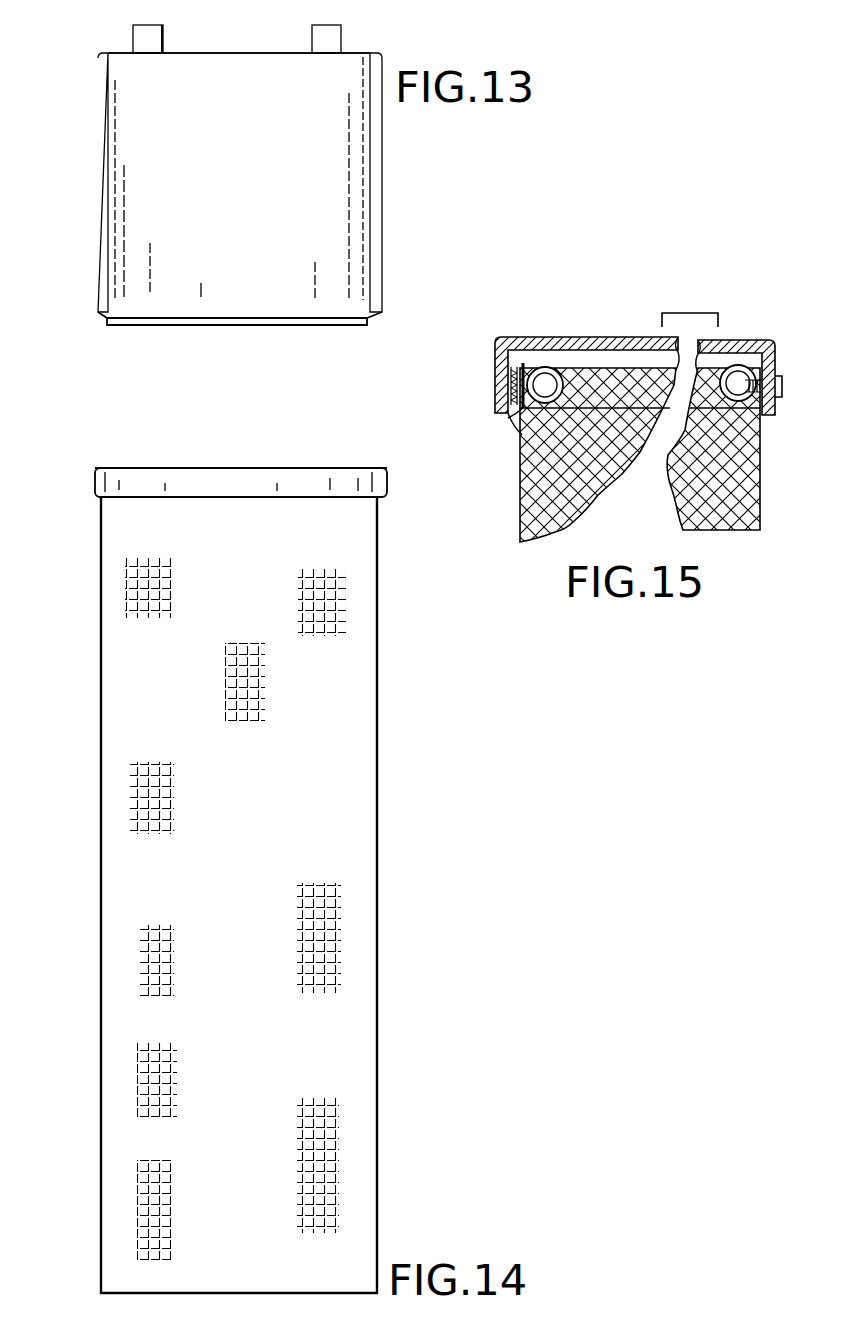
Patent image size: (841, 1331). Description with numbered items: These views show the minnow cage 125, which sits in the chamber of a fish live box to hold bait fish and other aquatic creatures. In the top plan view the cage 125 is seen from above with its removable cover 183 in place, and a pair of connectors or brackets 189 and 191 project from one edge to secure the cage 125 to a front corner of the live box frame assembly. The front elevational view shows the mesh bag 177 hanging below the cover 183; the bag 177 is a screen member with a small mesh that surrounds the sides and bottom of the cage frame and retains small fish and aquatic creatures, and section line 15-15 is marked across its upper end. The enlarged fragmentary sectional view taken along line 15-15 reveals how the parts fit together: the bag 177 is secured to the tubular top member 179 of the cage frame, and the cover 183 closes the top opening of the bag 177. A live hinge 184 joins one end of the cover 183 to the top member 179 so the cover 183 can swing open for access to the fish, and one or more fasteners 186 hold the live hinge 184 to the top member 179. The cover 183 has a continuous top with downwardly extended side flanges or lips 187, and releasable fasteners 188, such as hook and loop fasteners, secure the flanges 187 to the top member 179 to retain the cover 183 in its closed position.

In FIG. 13, the minnow cage 125 is at (84, 202).
In FIG. 14, the minnow cage 125 is at (85, 650).
In FIG. 14, the mesh bag 177 is at (364, 887).
In FIG. 15, the mesh bag 177 is at (515, 500).
In FIG. 15, the top member 179 is at (527, 425).
In FIG. 13, the removable cover 183 is at (360, 185).
In FIG. 14, the removable cover 183 is at (347, 472).
In FIG. 15, the removable cover 183 is at (568, 340).
In FIG. 13, the live hinge 184 is at (222, 52).
In FIG. 15, the live hinge 184 is at (762, 350).
In FIG. 15, the fasteners 186 is at (783, 400).
In FIG. 13, the side flanges 187 is at (182, 325).
In FIG. 14, the side flanges 187 is at (147, 478).
In FIG. 15, the side flanges 187 is at (501, 384).
In FIG. 15, the releasable fasteners 188 is at (510, 418).
In FIG. 13, the bracket 189 is at (146, 40).
In FIG. 13, the bracket 191 is at (331, 40).
In FIG. 14, the section line 15- 15 is at (262, 428).